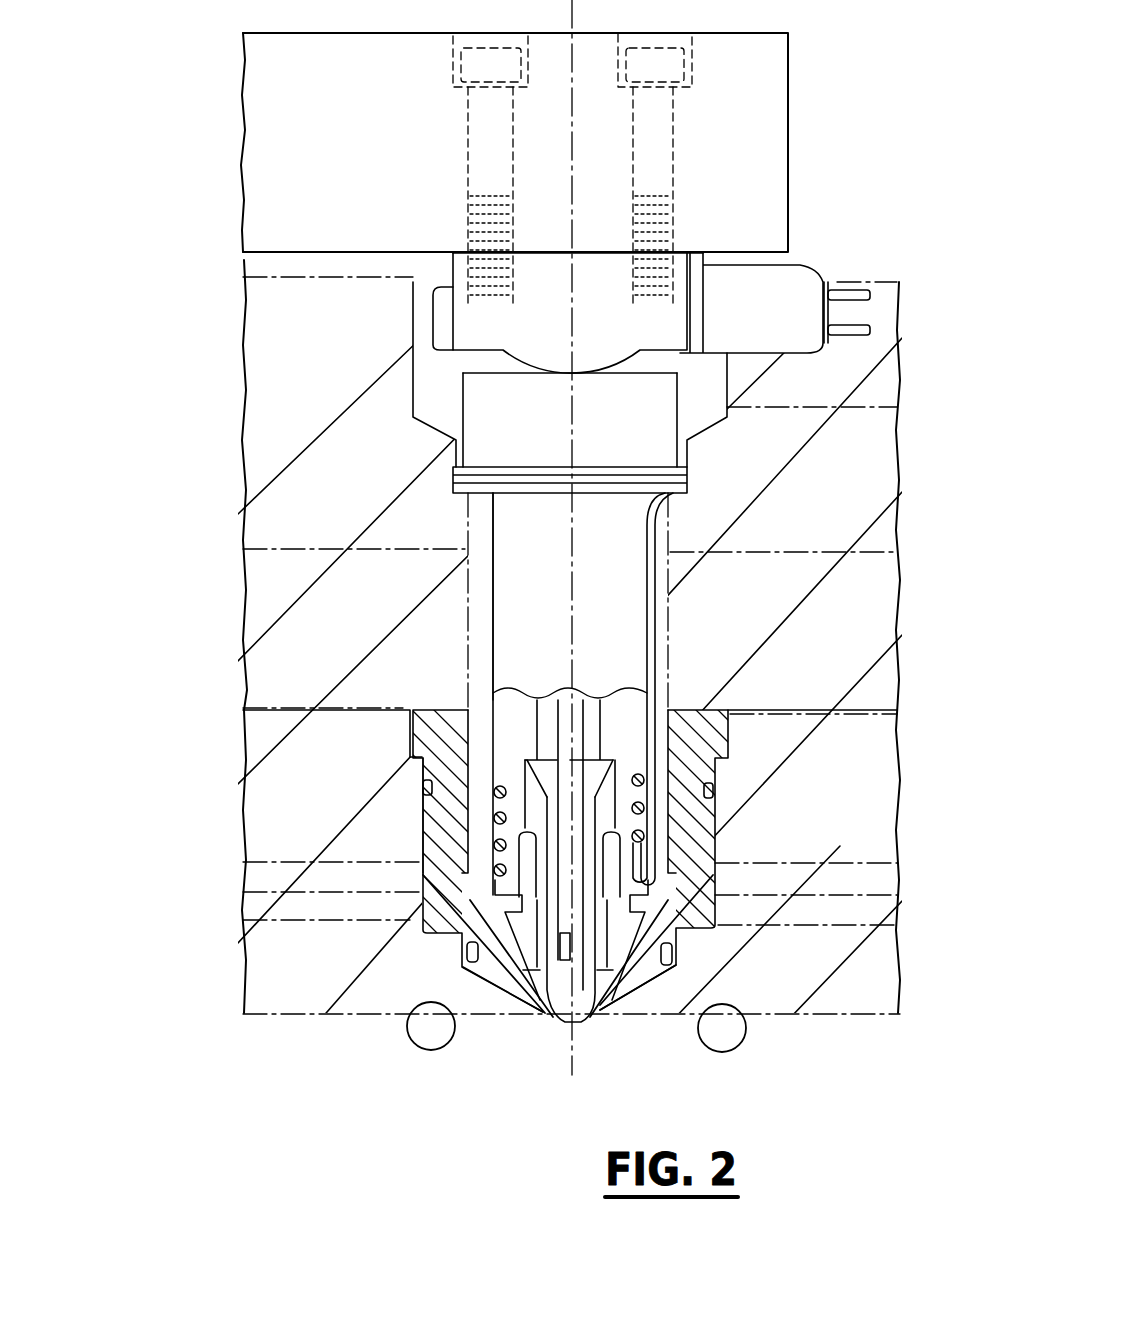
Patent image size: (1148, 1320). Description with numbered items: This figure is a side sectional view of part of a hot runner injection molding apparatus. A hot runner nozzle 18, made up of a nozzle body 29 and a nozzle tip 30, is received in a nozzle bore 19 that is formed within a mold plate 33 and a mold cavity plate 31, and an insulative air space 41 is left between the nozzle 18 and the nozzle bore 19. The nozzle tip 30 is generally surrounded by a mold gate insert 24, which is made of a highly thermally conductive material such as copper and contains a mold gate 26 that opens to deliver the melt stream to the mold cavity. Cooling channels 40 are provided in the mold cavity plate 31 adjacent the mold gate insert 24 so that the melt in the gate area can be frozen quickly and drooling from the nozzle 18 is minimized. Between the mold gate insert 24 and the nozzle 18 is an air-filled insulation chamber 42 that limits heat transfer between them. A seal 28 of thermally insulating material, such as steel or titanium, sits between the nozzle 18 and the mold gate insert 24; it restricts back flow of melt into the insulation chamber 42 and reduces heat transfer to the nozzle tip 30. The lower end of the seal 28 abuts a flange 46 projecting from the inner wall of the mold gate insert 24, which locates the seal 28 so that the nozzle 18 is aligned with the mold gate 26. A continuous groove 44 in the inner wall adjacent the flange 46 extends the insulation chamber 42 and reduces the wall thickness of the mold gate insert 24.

The hot runner nozzle 18 is at (656, 616).
The nozzle bore 19 is at (470, 580).
The mold gate insert 24 is at (693, 837).
The mold gate 26 is at (582, 1027).
The seal 28 is at (508, 915).
The nozzle body 29 is at (630, 713).
The nozzle tip 30 is at (708, 769).
The mold cavity plate 31 is at (290, 803).
The mold plate 33 is at (283, 432).
The cooling channel 40 is at (417, 1028).
The insulative air space 41 is at (480, 647).
The insulation chamber 42 is at (478, 874).
The groove 44 is at (667, 948).
The flange 46 is at (620, 980).